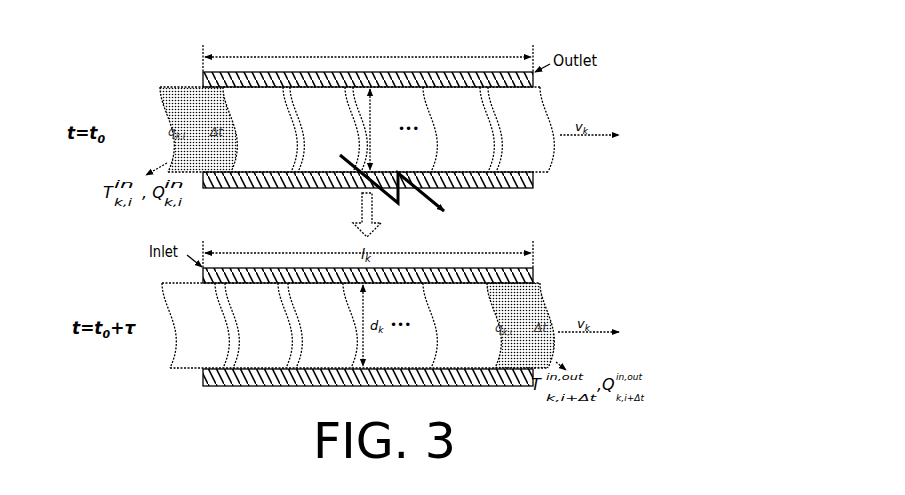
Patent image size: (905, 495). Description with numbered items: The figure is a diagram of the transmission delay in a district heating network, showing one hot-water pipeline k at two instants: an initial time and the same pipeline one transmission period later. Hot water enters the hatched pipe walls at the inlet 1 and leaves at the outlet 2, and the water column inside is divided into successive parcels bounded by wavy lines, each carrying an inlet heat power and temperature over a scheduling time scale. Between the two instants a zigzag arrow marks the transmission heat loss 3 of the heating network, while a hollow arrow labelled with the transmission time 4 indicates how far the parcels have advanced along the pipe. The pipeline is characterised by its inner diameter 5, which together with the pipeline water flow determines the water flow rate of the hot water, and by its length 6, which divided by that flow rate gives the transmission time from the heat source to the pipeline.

The inlet of pipe segment 1 is at (202, 71).
The outlet of pipe segment 2 is at (535, 268).
The heat loss 3 is at (428, 190).
The time step tau 4 is at (359, 215).
The pipe diameter d_k 5 is at (380, 129).
The pipe length l_k 6 is at (368, 58).